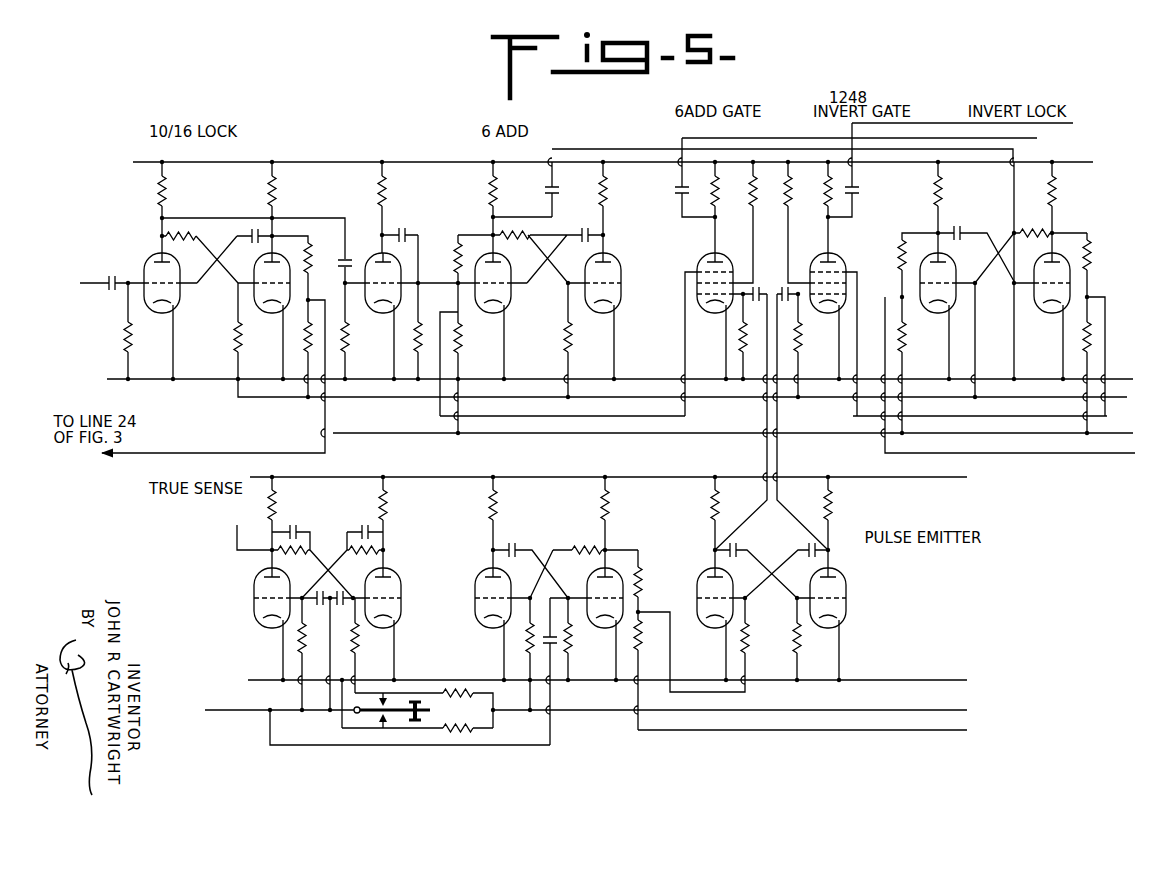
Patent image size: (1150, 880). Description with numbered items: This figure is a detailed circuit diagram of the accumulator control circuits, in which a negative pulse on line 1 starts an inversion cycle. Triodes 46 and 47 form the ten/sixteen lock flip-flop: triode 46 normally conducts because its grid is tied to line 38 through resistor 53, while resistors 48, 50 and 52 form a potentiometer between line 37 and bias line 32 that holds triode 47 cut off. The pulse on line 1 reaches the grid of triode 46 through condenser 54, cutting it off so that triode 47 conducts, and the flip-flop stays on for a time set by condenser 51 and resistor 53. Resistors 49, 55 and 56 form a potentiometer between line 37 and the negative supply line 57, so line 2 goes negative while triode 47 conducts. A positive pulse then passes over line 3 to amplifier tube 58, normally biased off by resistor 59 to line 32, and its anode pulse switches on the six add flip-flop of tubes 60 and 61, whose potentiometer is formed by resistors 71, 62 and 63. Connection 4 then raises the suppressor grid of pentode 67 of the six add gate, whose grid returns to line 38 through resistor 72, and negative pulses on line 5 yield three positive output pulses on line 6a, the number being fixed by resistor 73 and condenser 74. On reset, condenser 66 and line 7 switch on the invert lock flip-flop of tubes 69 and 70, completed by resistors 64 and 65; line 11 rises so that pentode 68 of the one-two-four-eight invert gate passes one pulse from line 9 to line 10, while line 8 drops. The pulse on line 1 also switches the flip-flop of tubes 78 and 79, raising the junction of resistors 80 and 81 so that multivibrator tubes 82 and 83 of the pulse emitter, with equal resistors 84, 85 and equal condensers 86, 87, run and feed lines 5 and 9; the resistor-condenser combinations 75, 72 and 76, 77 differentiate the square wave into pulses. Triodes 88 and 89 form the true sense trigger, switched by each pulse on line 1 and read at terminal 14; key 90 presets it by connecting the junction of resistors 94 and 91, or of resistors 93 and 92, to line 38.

The line 1 is at (100, 283).
The line 2 is at (188, 453).
The line 3 is at (303, 218).
The connection 4 is at (685, 338).
The line 5 is at (766, 493).
The line 6a is at (1037, 139).
The line 7 is at (603, 149).
The line 8 is at (1031, 453).
The line 9 is at (779, 493).
The line 10 is at (1073, 124).
The line 11 is at (855, 338).
The terminal 14 is at (237, 550).
The bias line 32 is at (254, 399).
The line 37 is at (1064, 162).
The line 38 is at (1133, 379).
The triode 46 is at (148, 264).
The triode 47 is at (288, 295).
The resistor 48 is at (166, 195).
The resistor 49 is at (270, 198).
The resistor 50 is at (197, 238).
The condenser 51 is at (254, 242).
The resistor 52 is at (240, 338).
The resistor 53 is at (131, 336).
The condenser 54 is at (112, 272).
The resistor 55 is at (311, 246).
The resistor 56 is at (305, 346).
The negative voltage supply line 57 is at (360, 434).
The amplifier tube 58 is at (396, 270).
The resistor 59 is at (350, 336).
The tube 60 is at (512, 291).
The tube 61 is at (621, 291).
The resistor 62 is at (455, 246).
The resistor 63 is at (461, 335).
The resistor 64 is at (1092, 255).
The resistor 65 is at (1092, 337).
The condenser 66 is at (556, 193).
The pentode 67 is at (700, 258).
The pentode 68 is at (841, 258).
The tube 69 is at (926, 310).
The tube 70 is at (1036, 310).
The resistor 71 is at (495, 196).
The resistor 72 is at (748, 352).
The resistor 73 is at (419, 324).
The condenser 74 is at (584, 230).
The condenser 75 is at (754, 289).
The condenser 76 is at (785, 298).
The resistor 77 is at (800, 343).
The tube 78 is at (476, 611).
The tube 79 is at (590, 623).
The resistor 80 is at (643, 574).
The resistor 81 is at (645, 657).
The multivibrator tube 82 is at (702, 618).
The multivibrator tube 83 is at (848, 618).
The resistor 84 is at (751, 636).
The resistor 85 is at (794, 655).
The condenser 86 is at (741, 544).
The condenser 87 is at (805, 544).
The triode 88 is at (254, 611).
The triode 89 is at (396, 570).
The key 90 is at (354, 710).
The resistor 91 is at (466, 727).
The resistor 92 is at (458, 698).
The resistor 93 is at (358, 655).
The resistor 94 is at (304, 660).